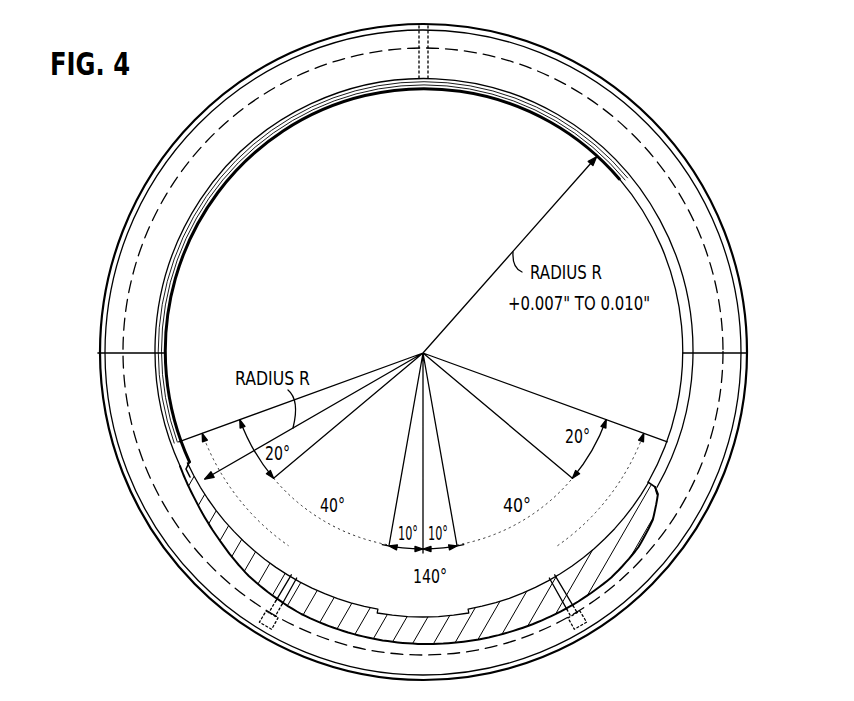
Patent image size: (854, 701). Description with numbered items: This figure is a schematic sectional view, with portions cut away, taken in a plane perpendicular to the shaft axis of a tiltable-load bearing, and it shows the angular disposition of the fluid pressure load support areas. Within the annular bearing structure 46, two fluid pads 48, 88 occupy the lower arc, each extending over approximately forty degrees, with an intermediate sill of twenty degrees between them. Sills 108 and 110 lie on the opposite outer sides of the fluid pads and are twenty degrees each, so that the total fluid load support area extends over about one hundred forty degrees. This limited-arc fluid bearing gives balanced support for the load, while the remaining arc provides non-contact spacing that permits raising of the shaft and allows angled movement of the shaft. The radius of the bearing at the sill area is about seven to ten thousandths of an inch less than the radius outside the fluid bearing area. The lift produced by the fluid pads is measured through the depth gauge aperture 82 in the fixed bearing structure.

The outer ring 46 is at (697, 458).
The depth gauge aperture 82 is at (428, 62).
The fluid pad 48 is at (277, 561).
The fluid pad 88 is at (538, 595).
The sill 108 is at (206, 492).
The sill 110 is at (650, 506).